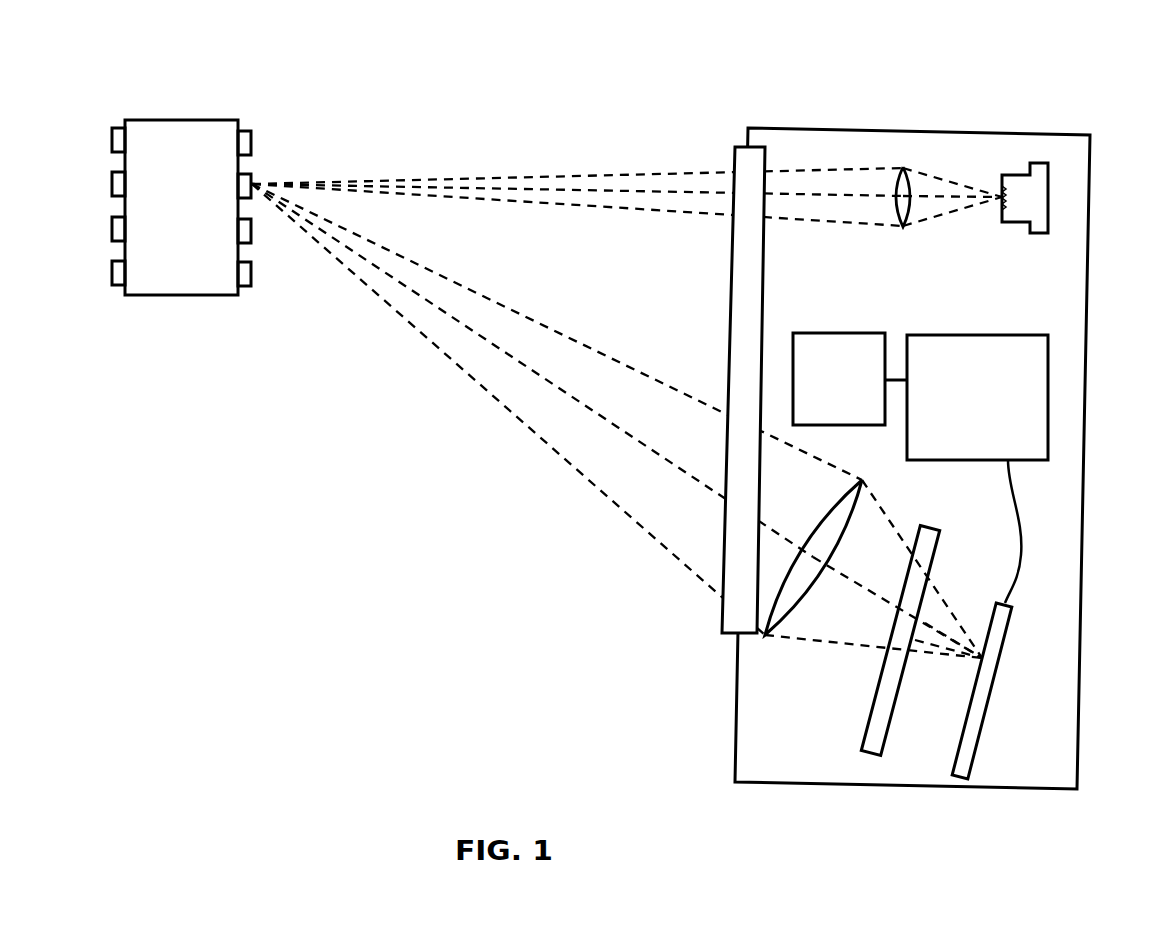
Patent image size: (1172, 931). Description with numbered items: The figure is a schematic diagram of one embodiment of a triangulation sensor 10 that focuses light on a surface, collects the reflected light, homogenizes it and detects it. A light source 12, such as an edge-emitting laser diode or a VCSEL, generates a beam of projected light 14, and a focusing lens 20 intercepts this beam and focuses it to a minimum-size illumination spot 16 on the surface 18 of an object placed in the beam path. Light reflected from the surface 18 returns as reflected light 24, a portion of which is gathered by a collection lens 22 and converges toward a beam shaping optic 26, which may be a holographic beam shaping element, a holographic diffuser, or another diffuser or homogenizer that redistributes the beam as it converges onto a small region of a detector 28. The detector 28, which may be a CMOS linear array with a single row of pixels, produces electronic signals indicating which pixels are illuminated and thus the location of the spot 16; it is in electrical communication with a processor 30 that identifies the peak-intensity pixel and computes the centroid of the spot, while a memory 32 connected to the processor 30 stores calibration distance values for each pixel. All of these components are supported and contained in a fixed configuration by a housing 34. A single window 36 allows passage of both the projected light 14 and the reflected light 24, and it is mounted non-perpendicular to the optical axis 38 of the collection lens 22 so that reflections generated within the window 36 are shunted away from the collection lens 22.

The triangulation sensor 10 is at (530, 103).
The light source 12 is at (1055, 182).
The beam of projected light 14 is at (948, 178).
The illumination spot 16 is at (262, 168).
The surface 18 is at (194, 228).
The focusing lens 20 is at (902, 163).
The collection lens 22 is at (760, 644).
The reflected light 24 is at (550, 452).
The beam shaping optic 26 is at (852, 740).
The detector 28 is at (996, 691).
The processor 30 is at (987, 416).
The memory 32 is at (848, 396).
The housing 34 is at (829, 128).
The window 36 is at (724, 146).
The optical axis 38 is at (588, 401).